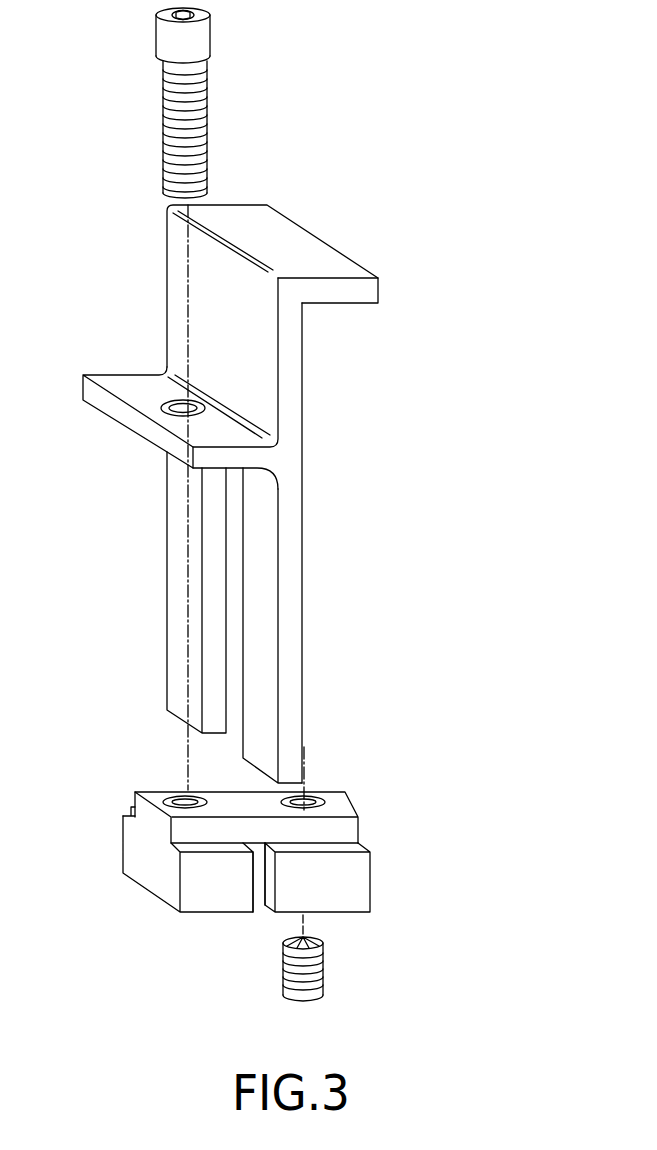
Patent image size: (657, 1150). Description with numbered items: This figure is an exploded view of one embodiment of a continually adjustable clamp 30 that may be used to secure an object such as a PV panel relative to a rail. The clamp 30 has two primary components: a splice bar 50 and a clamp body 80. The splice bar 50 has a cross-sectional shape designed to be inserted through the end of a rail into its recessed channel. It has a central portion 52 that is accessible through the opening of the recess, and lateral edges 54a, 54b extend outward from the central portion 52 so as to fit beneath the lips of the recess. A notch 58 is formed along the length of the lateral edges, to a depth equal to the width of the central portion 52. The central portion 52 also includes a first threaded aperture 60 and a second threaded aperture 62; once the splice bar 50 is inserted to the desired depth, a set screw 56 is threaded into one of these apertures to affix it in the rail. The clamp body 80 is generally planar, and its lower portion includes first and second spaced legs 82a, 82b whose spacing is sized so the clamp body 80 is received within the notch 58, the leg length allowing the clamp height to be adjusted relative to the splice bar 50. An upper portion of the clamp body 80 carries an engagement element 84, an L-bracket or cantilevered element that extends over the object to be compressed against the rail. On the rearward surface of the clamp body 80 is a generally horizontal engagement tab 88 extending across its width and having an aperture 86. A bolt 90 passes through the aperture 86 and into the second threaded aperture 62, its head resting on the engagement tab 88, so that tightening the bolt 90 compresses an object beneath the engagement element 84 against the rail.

The continually adjustable clamp 30 is at (444, 600).
The bolt 90 is at (197, 49).
The clamp body 80 is at (257, 507).
The engagement element 84 is at (366, 291).
The engagement tab 88 is at (120, 382).
The aperture 86 is at (158, 402).
The first leg 82a is at (265, 695).
The second leg 82b is at (178, 657).
The splice bar 50 is at (265, 866).
The central portion 52 is at (335, 808).
The first threaded aperture 60 is at (315, 797).
The second threaded aperture 62 is at (178, 796).
The lateral edge 54a is at (177, 850).
The lateral edge 54b is at (128, 812).
The notch 58 is at (262, 892).
The set screw 56 is at (315, 968).